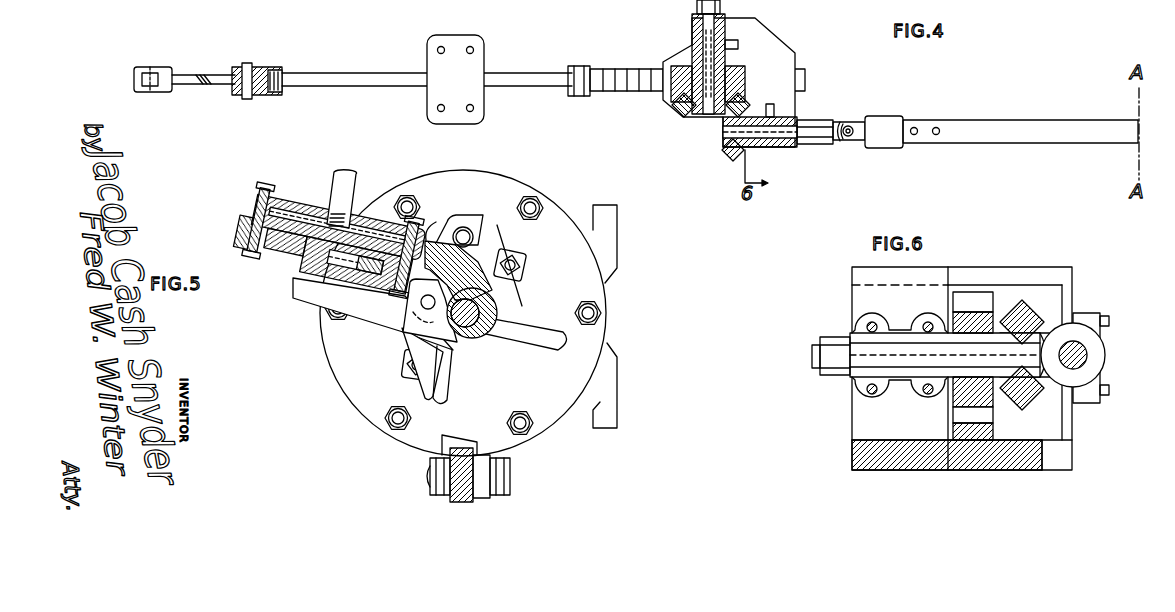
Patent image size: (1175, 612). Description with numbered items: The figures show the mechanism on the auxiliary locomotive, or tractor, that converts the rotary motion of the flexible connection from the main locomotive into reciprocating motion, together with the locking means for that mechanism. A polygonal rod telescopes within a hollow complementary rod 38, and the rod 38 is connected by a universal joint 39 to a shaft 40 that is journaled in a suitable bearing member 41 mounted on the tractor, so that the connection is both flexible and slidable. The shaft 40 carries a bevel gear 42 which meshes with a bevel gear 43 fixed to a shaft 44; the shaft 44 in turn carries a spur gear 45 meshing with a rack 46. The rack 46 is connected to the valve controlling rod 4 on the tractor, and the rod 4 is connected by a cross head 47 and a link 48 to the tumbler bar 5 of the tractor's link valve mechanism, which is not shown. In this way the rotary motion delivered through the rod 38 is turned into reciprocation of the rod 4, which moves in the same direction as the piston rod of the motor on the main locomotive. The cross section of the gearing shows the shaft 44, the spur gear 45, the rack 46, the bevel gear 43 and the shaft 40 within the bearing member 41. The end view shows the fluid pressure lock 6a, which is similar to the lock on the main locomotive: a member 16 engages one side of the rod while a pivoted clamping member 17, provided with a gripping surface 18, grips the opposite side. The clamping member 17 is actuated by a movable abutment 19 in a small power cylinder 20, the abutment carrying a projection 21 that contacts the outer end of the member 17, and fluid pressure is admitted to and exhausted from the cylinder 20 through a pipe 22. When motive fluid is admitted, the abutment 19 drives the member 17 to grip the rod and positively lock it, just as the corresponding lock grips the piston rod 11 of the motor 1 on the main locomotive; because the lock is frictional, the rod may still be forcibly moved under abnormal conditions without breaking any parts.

In FIG. 5, the power motor 1 is at (562, 205).
In FIG. 4, the rod 4 is at (508, 73).
In FIG. 4, the tumbler bar 5 is at (133, 78).
In FIG. 4, the fluid pressure lock 6a is at (431, 64).
In FIG. 5, the piston rod 11 is at (473, 330).
In FIG. 5, the member 16 is at (454, 223).
In FIG. 5, the pivoted clamping member 17 is at (380, 317).
In FIG. 5, the gripping surface 18 is at (455, 345).
In FIG. 5, the movable abutment 19 is at (296, 236).
In FIG. 5, the power cylinder 20 is at (287, 207).
In FIG. 5, the projection 21 is at (307, 263).
In FIG. 5, the pipe 22 is at (345, 172).
In FIG. 4, the hollow complementary rod 38 is at (1013, 122).
In FIG. 4, the universal joint 39 is at (879, 118).
In FIG. 4, the shaft 40 is at (783, 150).
In FIG. 6, the shaft 40 is at (1088, 355).
In FIG. 4, the bearing member 41 is at (778, 47).
In FIG. 6, the bearing member 41 is at (852, 296).
In FIG. 4, the bevel gear 42 is at (727, 156).
In FIG. 4, the bevel gear 43 is at (687, 104).
In FIG. 6, the bevel gear 43 is at (1035, 310).
In FIG. 4, the shaft 44 is at (693, 30).
In FIG. 6, the shaft 44 is at (929, 355).
In FIG. 4, the spur gear 45 is at (687, 68).
In FIG. 6, the spur gear 45 is at (978, 300).
In FIG. 4, the rack 46 is at (635, 82).
In FIG. 6, the rack 46 is at (962, 430).
In FIG. 4, the cross head 47 is at (264, 66).
In FIG. 4, the link 48 is at (193, 72).